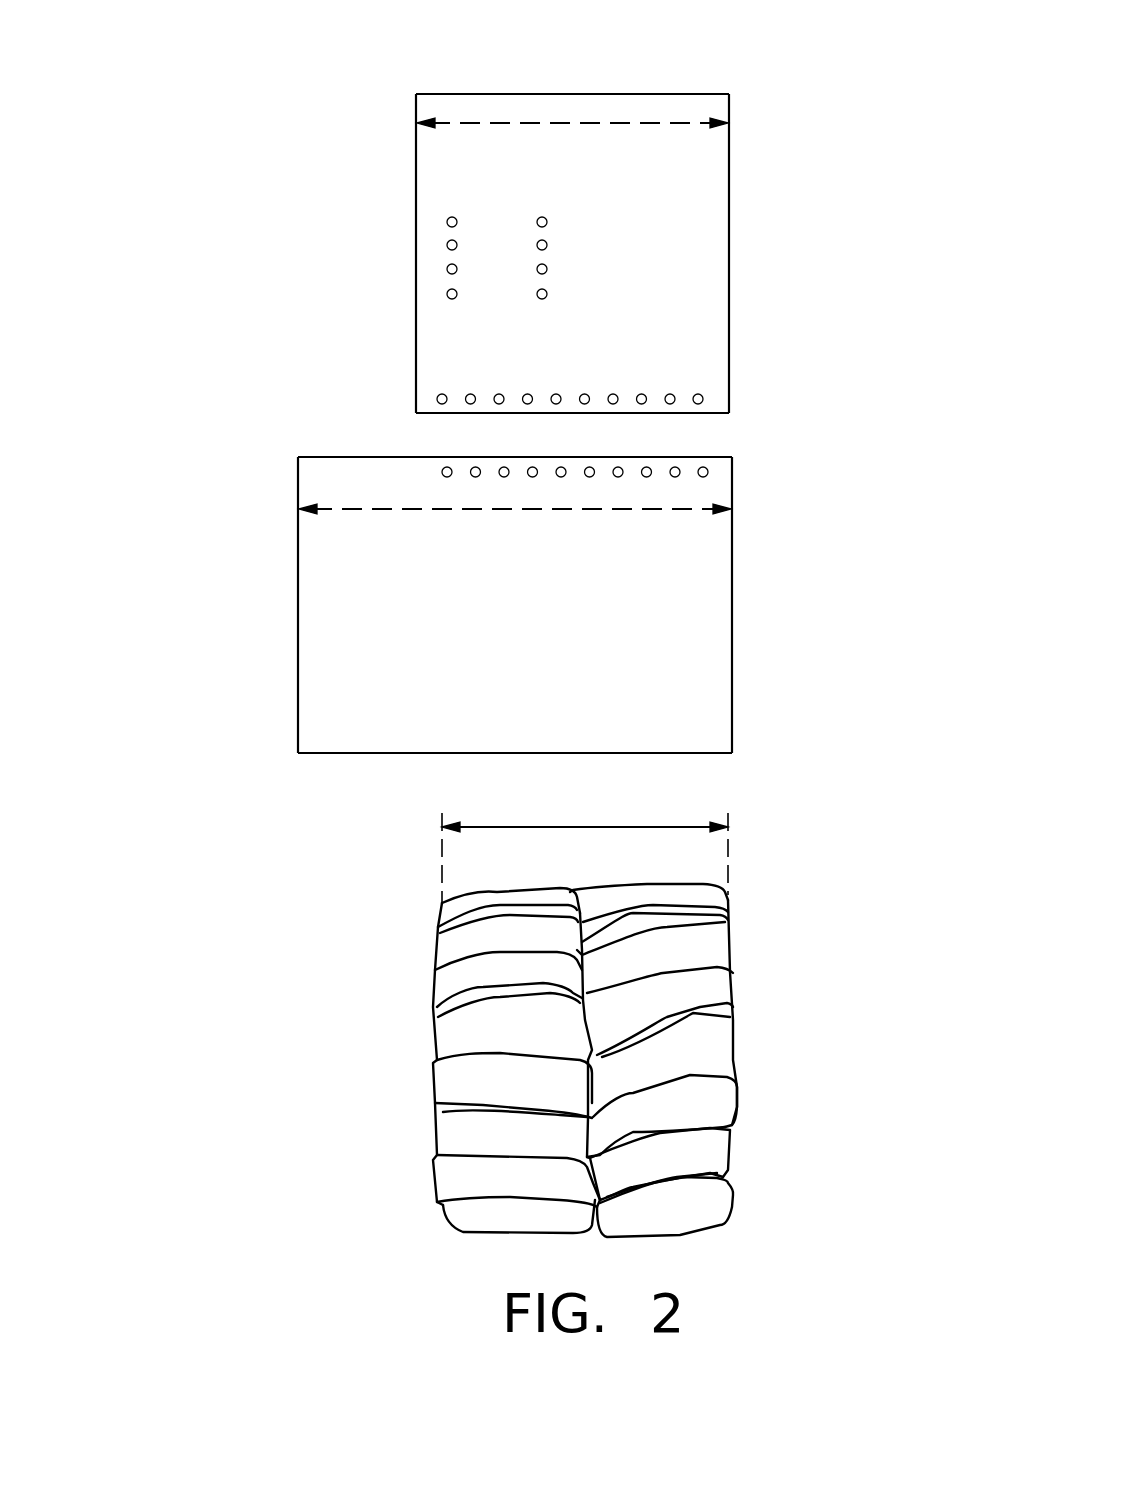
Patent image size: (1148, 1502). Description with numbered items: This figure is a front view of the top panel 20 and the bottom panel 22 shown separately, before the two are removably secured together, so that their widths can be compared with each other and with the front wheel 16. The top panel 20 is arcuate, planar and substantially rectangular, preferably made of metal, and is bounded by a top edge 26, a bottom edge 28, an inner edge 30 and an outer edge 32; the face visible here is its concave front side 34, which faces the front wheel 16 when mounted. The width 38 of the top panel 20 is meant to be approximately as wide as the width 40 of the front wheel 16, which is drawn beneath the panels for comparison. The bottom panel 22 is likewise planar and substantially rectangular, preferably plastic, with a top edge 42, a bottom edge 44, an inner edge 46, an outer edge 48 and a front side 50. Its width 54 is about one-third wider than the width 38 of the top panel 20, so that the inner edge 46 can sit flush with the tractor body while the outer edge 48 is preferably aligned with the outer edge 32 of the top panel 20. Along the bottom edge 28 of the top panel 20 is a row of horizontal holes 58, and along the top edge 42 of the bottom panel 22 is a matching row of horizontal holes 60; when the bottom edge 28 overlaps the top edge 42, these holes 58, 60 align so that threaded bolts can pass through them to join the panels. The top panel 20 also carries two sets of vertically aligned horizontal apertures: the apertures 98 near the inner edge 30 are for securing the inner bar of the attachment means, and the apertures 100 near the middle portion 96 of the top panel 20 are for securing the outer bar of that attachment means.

The front wheel 16 is at (715, 945).
The top panel 20 is at (708, 173).
The bottom panel 22 is at (700, 642).
The top edge 26 is at (618, 86).
The bottom edge 28 is at (696, 420).
The inner edge 30 is at (400, 221).
The outer edge 32 is at (746, 266).
The concave front side 34 is at (521, 191).
The width 38 is at (475, 124).
The width 40 is at (680, 822).
The top edge 42 is at (344, 446).
The bottom edge 44 is at (416, 769).
The inner edge 46 is at (284, 627).
The outer edge 48 is at (750, 553).
The front side 50 is at (484, 586).
The width 54 is at (378, 510).
The horizontal holes 58 is at (701, 394).
The horizontal holes 60 is at (709, 472).
The middle portion 96 is at (589, 233).
The apertures 98 is at (446, 295).
The apertures 100 is at (548, 293).